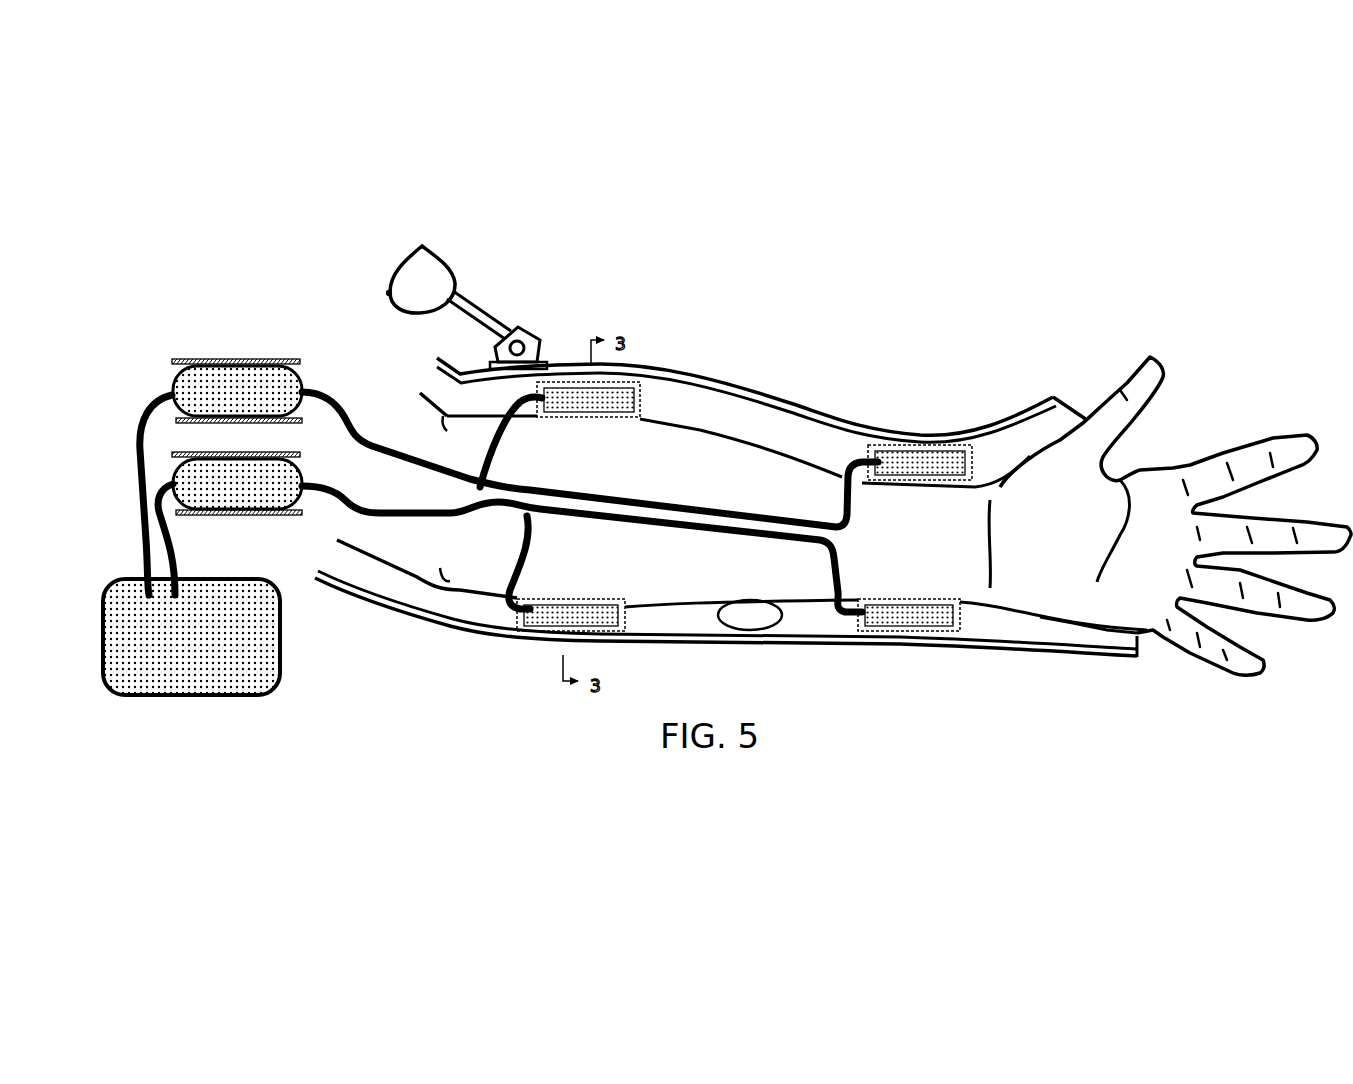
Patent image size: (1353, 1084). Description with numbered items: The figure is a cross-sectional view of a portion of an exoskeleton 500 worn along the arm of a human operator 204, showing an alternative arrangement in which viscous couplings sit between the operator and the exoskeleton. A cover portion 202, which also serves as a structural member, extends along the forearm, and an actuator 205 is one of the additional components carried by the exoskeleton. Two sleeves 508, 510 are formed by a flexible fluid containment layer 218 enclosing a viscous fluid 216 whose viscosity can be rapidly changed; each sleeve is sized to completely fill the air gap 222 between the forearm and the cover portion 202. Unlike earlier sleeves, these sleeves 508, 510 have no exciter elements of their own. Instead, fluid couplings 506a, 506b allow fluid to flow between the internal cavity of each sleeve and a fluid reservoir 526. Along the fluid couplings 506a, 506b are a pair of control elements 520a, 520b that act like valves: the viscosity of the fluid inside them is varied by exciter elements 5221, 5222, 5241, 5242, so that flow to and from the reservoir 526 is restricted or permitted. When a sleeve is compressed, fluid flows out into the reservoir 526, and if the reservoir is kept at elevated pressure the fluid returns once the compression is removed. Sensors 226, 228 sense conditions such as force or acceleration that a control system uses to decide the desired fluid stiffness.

The cover portion 202 is at (795, 425).
The human operator 204 is at (705, 464).
The actuator 205 is at (488, 292).
The viscous fluid 216 is at (612, 400).
The flexible fluid containment layer 218 is at (562, 384).
The air gap 222 is at (728, 430).
The sensor 226 is at (546, 362).
The sensor 228 is at (750, 615).
The exoskeleton 500 is at (773, 310).
The fluid coupling 506a is at (383, 457).
The fluid coupling 506b is at (352, 512).
The sleeve 508 is at (588, 428).
The sleeve 510 is at (918, 487).
The control element 520a is at (237, 373).
The control element 520b is at (237, 498).
The exciter element 5221 is at (188, 360).
The exciter element 5222 is at (229, 433).
The exciter element 5241 is at (290, 452).
The exciter element 5242 is at (292, 516).
The fluid reservoir 526 is at (191, 637).